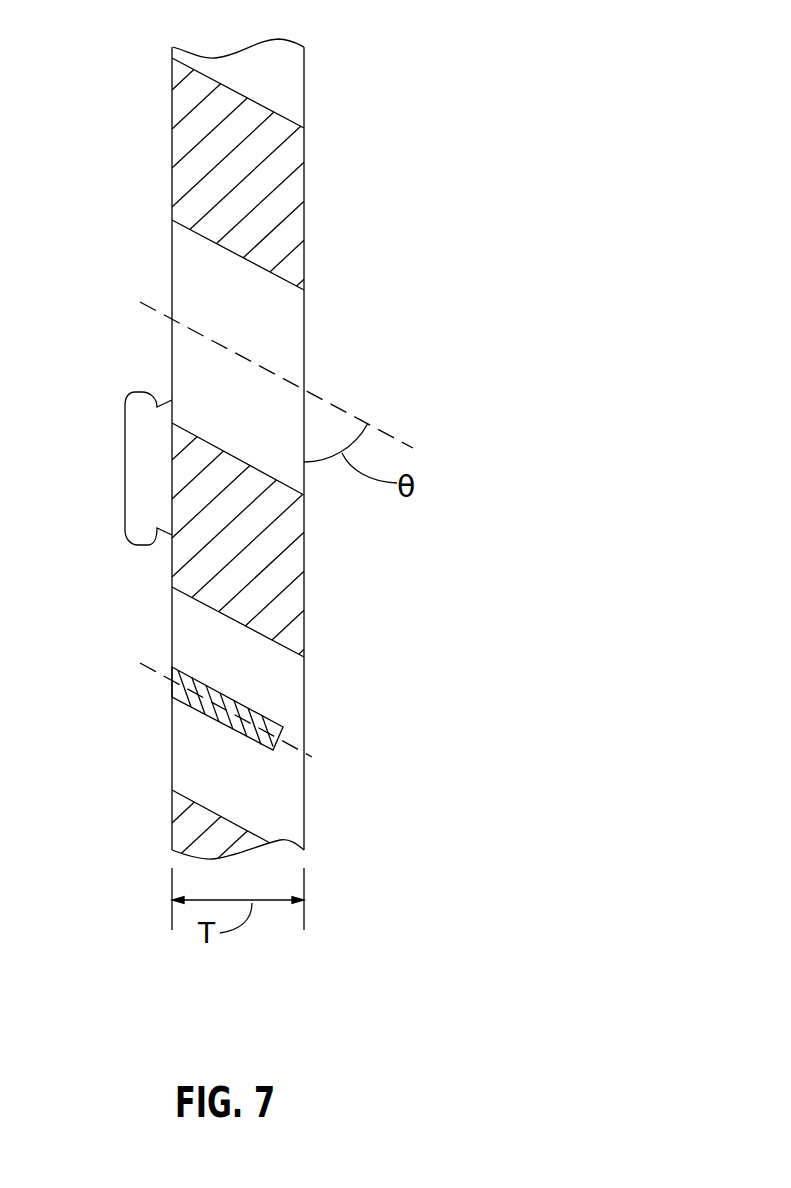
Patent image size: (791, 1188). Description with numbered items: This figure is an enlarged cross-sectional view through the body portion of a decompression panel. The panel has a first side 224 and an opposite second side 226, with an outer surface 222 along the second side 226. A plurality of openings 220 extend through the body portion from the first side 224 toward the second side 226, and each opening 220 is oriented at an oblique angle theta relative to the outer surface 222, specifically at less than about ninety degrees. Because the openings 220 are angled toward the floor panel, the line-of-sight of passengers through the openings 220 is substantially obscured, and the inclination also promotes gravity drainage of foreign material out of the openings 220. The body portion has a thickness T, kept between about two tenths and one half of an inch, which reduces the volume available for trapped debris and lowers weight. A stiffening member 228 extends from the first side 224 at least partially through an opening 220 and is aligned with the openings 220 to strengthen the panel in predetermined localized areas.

The openings 220 is at (348, 364).
The outer surface 222 is at (304, 182).
The first side 224 is at (140, 833).
The second side 226 is at (333, 826).
The stiffening members 228 is at (182, 692).